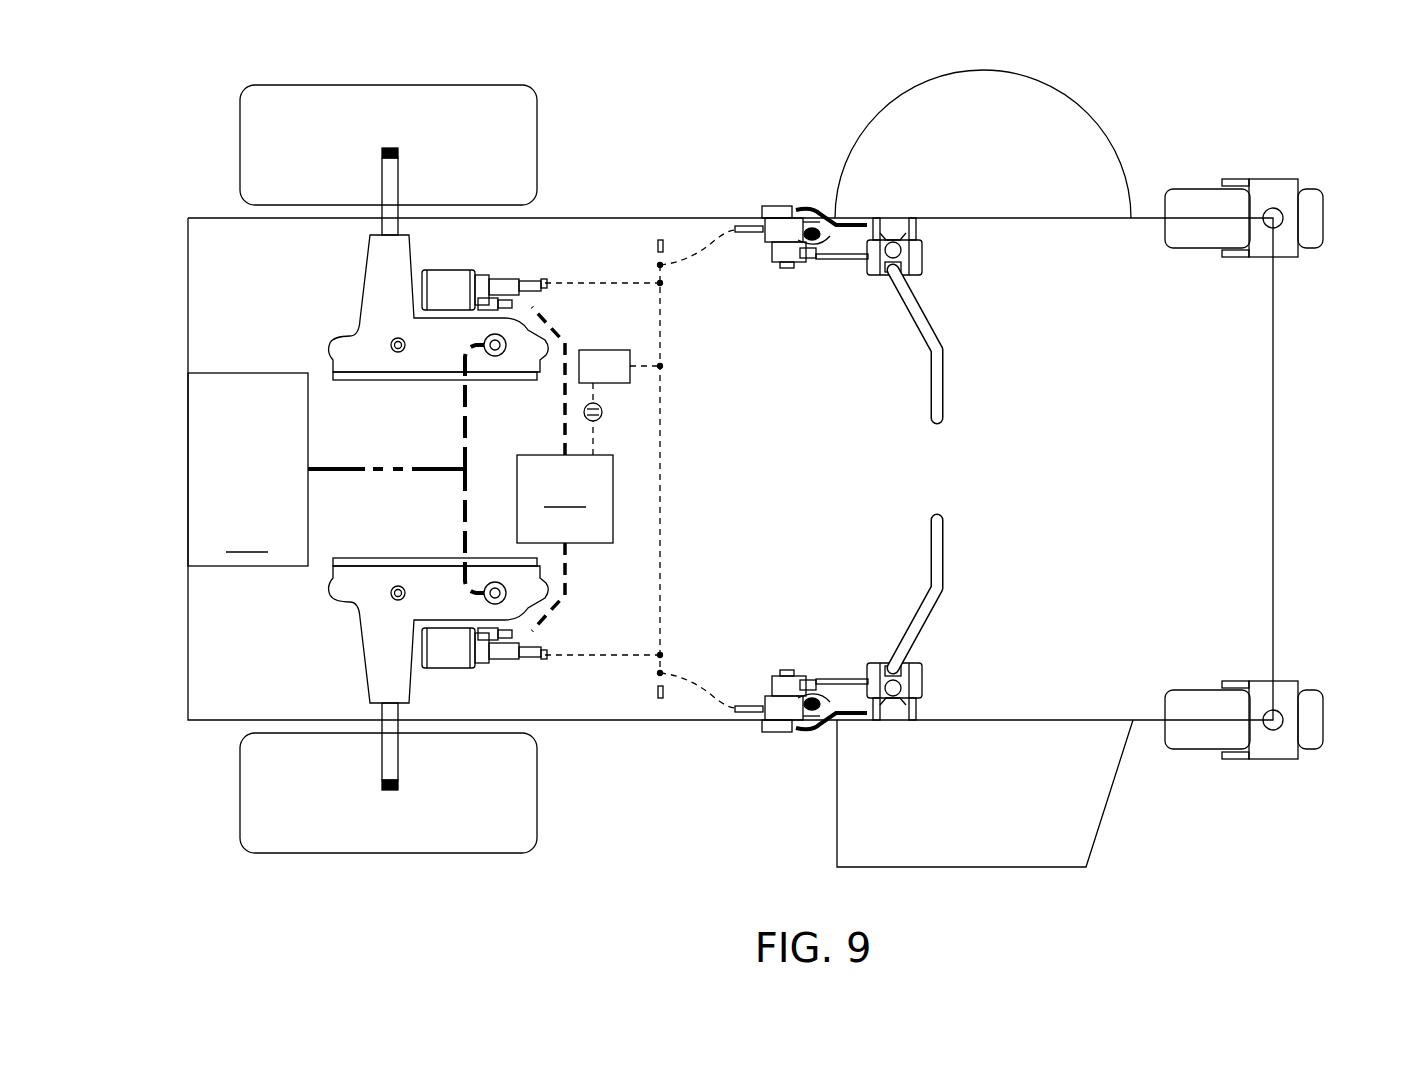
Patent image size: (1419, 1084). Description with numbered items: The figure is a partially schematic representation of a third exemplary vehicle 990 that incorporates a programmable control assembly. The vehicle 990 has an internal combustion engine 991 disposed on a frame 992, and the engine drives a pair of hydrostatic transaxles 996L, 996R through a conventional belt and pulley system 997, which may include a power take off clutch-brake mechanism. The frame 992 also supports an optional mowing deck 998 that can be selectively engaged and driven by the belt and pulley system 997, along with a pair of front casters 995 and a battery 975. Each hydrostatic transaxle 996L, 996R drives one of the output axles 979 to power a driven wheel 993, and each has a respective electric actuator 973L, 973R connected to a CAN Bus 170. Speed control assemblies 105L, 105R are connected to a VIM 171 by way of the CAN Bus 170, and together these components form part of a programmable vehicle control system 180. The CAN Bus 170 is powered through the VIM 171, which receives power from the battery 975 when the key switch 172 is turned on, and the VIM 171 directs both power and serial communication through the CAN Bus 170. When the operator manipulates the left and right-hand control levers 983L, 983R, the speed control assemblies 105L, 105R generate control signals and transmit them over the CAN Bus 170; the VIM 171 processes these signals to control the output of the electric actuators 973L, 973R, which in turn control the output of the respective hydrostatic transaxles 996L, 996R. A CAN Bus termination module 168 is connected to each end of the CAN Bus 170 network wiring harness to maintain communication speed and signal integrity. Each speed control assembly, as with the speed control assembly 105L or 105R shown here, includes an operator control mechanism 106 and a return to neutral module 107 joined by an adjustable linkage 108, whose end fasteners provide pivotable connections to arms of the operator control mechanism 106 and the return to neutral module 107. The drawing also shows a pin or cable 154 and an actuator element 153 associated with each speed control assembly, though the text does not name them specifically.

The vehicle 990 is at (684, 385).
The internal combustion engine 991 is at (248, 469).
The frame 992 is at (630, 218).
The driven wheel 993 is at (343, 85).
The front caster 995 is at (1325, 219).
The hydrostatic transaxle 996L is at (363, 292).
The hydrostatic transaxle 996R is at (362, 646).
The belt and pulley system 997 is at (327, 468).
The mowing deck 998 is at (990, 70).
The output axle 979 is at (398, 175).
The electric actuator 973L is at (443, 330).
The electric actuator 973R is at (443, 608).
The battery 975 is at (565, 469).
The VIM 171 is at (605, 350).
The key switch 172 is at (603, 406).
The CAN Bus 170 is at (662, 490).
The CAN Bus termination module 168 is at (656, 246).
The sensor cable 154 is at (707, 242).
The actuator 153 is at (813, 207).
The adjustable linkage 108 is at (838, 264).
The return to neutral (RTN) module 107 is at (748, 264).
The operator control mechanism 106 is at (945, 258).
The speed control assembly 105L is at (833, 471).
The speed control assembly 105R is at (807, 639).
The control lever 983L is at (945, 390).
The control lever 983R is at (945, 537).
The programmable vehicle control system 180 is at (914, 471).